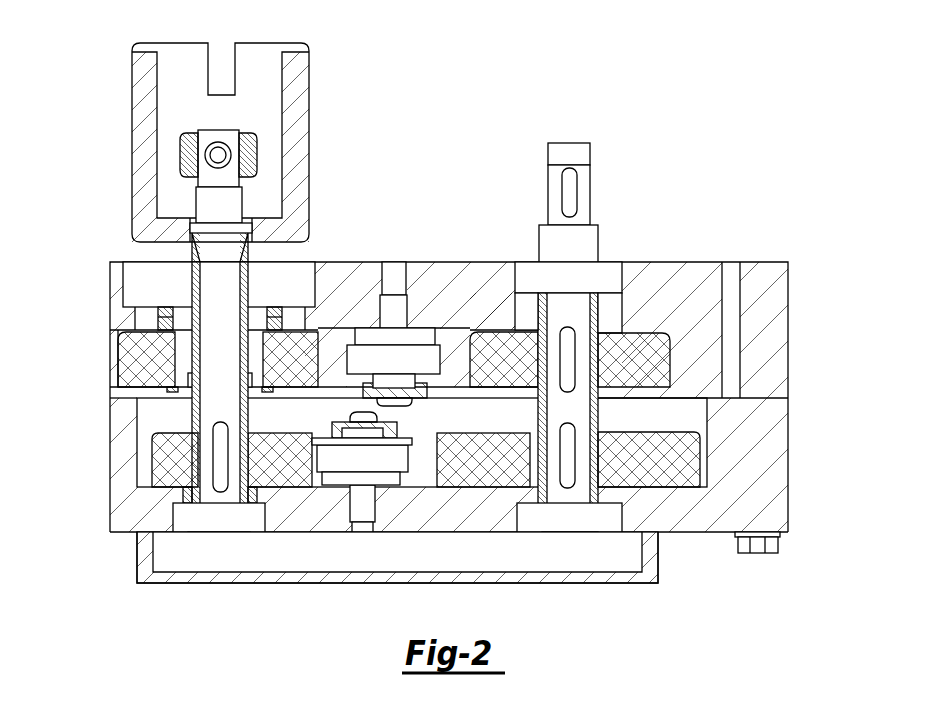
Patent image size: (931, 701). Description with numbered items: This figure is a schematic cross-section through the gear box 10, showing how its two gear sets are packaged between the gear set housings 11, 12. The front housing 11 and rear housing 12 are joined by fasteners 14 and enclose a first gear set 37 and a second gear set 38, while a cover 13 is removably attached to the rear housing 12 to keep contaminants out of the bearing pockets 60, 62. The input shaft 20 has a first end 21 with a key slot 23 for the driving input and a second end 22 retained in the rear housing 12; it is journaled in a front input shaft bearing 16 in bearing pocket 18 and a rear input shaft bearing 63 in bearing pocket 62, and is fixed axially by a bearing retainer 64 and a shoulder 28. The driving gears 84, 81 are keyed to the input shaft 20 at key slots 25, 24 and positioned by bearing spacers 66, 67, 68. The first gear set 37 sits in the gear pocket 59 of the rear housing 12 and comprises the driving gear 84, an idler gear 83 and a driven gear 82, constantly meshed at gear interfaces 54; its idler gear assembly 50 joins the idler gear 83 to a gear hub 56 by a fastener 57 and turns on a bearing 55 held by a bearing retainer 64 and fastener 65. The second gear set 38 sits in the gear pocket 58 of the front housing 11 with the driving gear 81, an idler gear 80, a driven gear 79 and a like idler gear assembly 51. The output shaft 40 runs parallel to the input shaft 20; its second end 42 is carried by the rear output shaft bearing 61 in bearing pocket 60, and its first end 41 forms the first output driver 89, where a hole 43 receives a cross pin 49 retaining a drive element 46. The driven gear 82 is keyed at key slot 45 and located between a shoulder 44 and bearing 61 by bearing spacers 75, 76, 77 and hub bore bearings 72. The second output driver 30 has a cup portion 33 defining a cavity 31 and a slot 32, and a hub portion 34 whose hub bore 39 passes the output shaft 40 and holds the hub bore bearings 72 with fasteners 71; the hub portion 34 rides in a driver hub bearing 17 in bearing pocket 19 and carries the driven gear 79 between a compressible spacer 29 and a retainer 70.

The gear box 10 is at (780, 218).
The front housing 11 is at (788, 298).
The rear housing 12 is at (788, 462).
The cover 13 is at (655, 577).
The fasteners 14 is at (758, 553).
The front input shaft bearing 16 is at (615, 268).
The driver hub bearing 17 is at (315, 283).
The bearing pocket 18 is at (520, 276).
The bearing pocket 19 is at (136, 290).
The input shaft 20 is at (579, 328).
The first end 21 is at (548, 153).
The second end 22 is at (545, 565).
The key slot 23 is at (572, 190).
The key slot 24 is at (577, 364).
The key slot 25 is at (577, 438).
The shoulder 28 is at (598, 235).
The spacer 29 is at (158, 320).
The second output driver 30 is at (221, 273).
The cavity 31 is at (232, 119).
The slot 32 is at (216, 50).
The cup portion 33 is at (131, 112).
The hub portion 34 is at (150, 365).
The first gear set 37 is at (707, 467).
The second gear set 38 is at (675, 362).
The hub bore 39 is at (195, 242).
The output shaft 40 is at (198, 182).
The first end 41 is at (198, 125).
The second end 42 is at (188, 546).
The hole 43 is at (222, 160).
The shoulder 44 is at (243, 205).
The key slot 45 is at (228, 440).
The drive element 46 is at (258, 157).
The cross pin 49 is at (236, 140).
The idler gear assembly 50 is at (328, 495).
The idler gear assembly 51 is at (418, 326).
The gear interfaces 54 is at (322, 348).
The bearing 55 is at (410, 300).
The gear hub 56 is at (372, 338).
The fastener 57 is at (440, 380).
The gear pocket 58 is at (110, 395).
The gear pocket 59 is at (118, 432).
The bearing pocket 60 is at (255, 520).
The rear output shaft bearing 61 is at (180, 514).
The bearing pocket 62 is at (522, 512).
The rear input shaft bearing 63 is at (625, 522).
The bearing retainer 64 is at (243, 558).
The fastener 65 is at (218, 568).
The bearing spacer 66 is at (600, 314).
The bearing spacer 67 is at (535, 402).
The bearing spacer 68 is at (605, 490).
The retainer 70 is at (268, 375).
The fastener 71 is at (196, 220).
The hub bore bearings 72 is at (190, 227).
The bearing spacer 75 is at (250, 245).
The bearing spacer 76 is at (175, 460).
The bearing spacer 77 is at (183, 496).
The driven gear 79 is at (118, 333).
The idler gear 80 is at (460, 328).
The driving gear 81 is at (665, 392).
The driven gear 82 is at (152, 455).
The idler gear 83 is at (410, 470).
The driving gear 84 is at (700, 488).
The first output driver 89 is at (178, 152).